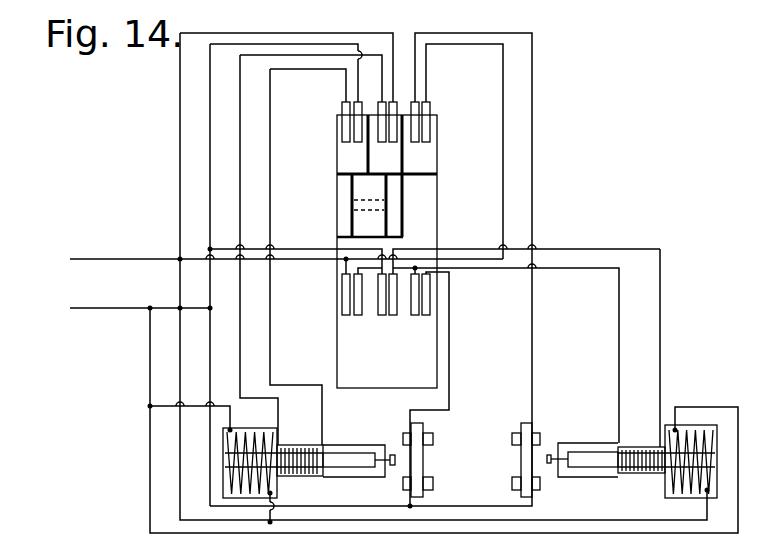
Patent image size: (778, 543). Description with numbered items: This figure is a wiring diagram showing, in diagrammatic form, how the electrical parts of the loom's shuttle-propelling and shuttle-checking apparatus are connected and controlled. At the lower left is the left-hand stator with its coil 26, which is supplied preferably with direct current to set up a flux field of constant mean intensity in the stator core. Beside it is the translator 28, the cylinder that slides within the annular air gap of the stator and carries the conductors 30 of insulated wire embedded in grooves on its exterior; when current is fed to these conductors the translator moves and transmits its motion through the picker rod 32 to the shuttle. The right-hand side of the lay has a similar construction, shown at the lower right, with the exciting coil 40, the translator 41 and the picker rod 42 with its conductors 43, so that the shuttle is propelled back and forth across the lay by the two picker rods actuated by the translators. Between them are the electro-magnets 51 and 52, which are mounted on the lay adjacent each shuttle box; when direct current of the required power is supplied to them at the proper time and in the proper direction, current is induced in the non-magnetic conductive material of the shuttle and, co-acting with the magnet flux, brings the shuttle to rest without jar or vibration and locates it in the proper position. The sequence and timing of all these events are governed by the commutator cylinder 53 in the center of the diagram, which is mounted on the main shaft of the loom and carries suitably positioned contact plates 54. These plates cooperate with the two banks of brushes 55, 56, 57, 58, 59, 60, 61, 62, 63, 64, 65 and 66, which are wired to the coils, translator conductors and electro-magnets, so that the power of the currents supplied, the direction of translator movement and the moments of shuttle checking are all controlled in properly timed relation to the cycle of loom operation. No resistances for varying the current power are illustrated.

The coil 26 is at (241, 435).
The translator 28 is at (323, 458).
The conductors 30 is at (305, 471).
The picker rod 32 is at (390, 455).
The exciting coil 40 is at (692, 430).
The translator 41 is at (620, 462).
The picker rod 42 is at (553, 456).
The conductors 43 is at (634, 472).
The electro-magnet 51 is at (425, 436).
The electro-magnet 52 is at (516, 436).
The commutator cylinder 53 is at (342, 350).
The contact plates 54 is at (396, 205).
The brush 55 is at (342, 128).
The brush 56 is at (355, 140).
The brush 57 is at (379, 107).
The brush 58 is at (396, 108).
The brush 59 is at (420, 110).
The brush 60 is at (428, 128).
The brush 61 is at (345, 293).
The brush 62 is at (355, 314).
The brush 63 is at (383, 316).
The brush 64 is at (394, 316).
The brush 65 is at (417, 314).
The brush 66 is at (427, 299).